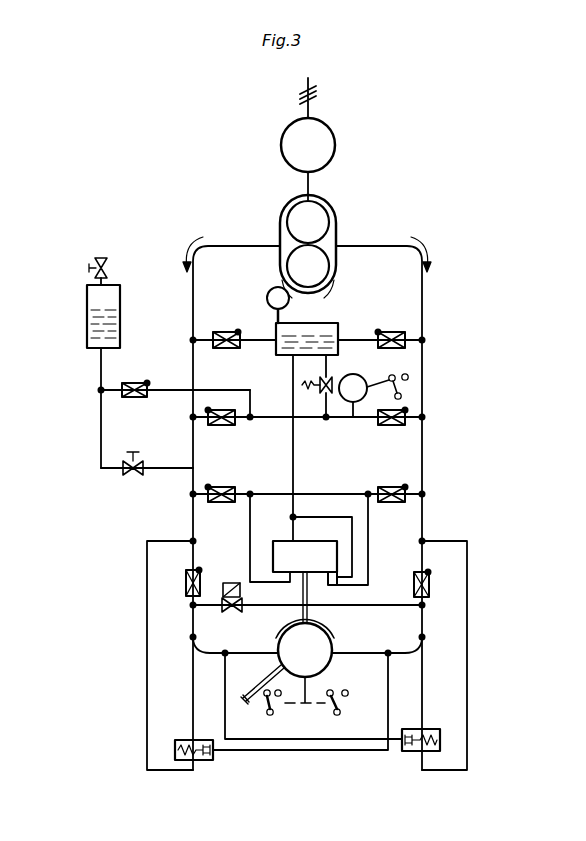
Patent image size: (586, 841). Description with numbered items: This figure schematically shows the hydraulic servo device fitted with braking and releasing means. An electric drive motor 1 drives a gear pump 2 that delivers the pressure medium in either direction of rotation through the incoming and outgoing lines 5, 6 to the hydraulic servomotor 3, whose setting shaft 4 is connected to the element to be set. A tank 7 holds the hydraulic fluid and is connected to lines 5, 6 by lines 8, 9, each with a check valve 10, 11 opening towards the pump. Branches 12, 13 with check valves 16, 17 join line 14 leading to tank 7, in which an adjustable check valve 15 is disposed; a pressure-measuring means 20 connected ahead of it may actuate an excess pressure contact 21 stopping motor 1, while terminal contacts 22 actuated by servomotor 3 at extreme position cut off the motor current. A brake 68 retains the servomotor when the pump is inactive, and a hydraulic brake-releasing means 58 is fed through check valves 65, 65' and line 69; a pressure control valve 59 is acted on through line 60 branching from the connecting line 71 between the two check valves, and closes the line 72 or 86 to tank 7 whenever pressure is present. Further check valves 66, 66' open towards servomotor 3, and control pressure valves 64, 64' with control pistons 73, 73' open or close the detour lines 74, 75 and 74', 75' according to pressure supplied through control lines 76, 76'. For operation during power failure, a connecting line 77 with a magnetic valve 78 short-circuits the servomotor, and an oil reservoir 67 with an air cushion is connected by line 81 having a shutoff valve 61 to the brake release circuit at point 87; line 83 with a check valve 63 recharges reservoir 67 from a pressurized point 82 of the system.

The electric drive motor 1 is at (335, 148).
The gear pump 2 is at (333, 215).
The hydraulic servomotor 3 is at (330, 667).
The setting shaft 4 is at (248, 704).
The incoming pressure medium line 5 is at (382, 246).
The outgoing pressure medium line 6 is at (262, 244).
The tank 7 is at (338, 352).
The line 8 is at (378, 330).
The line 9 is at (238, 332).
The check valve 10 is at (405, 336).
The check valve 11 is at (213, 338).
The branch 12 is at (338, 418).
The branch 13 is at (208, 418).
The line 14 is at (320, 362).
The adjustable check valve 15 is at (301, 385).
The check valve 16 is at (405, 422).
The check valve 17 is at (213, 425).
The pressure-measuring means 20 is at (401, 398).
The adjustable excess pressure contact 21 is at (408, 383).
The terminal contacts 22 is at (272, 714).
The hydraulic brake-releasing means 58 is at (273, 562).
The pressure control valve 59 is at (337, 585).
The line 60 is at (380, 512).
The shutoff valve 61 is at (125, 475).
The check valve 63 is at (122, 394).
The control pressure valve 64 is at (398, 785).
The control pressure valve 64' is at (229, 781).
The check valve 65 is at (429, 495).
The check valve 65' is at (196, 506).
The further check valve 66 is at (459, 594).
The further check valve 66' is at (149, 590).
The oil reservoir 67 is at (87, 300).
The brake 68 is at (282, 622).
The line 69 is at (250, 526).
The connecting line 71 is at (345, 494).
The line 72 is at (305, 517).
The control piston 73 is at (430, 770).
The control piston 73' is at (194, 776).
The detour line 74 is at (469, 655).
The detour line 74' is at (138, 655).
The detour line 75 is at (467, 724).
The detour line 75' is at (144, 738).
The control line 76 is at (313, 727).
The control line 76' is at (300, 729).
The connecting line 77 is at (350, 607).
The magnetic valve 78 is at (230, 614).
The line 81 is at (165, 470).
The point 82 is at (250, 425).
The line 83 is at (172, 388).
The line 86 is at (293, 440).
The point 87 is at (250, 494).